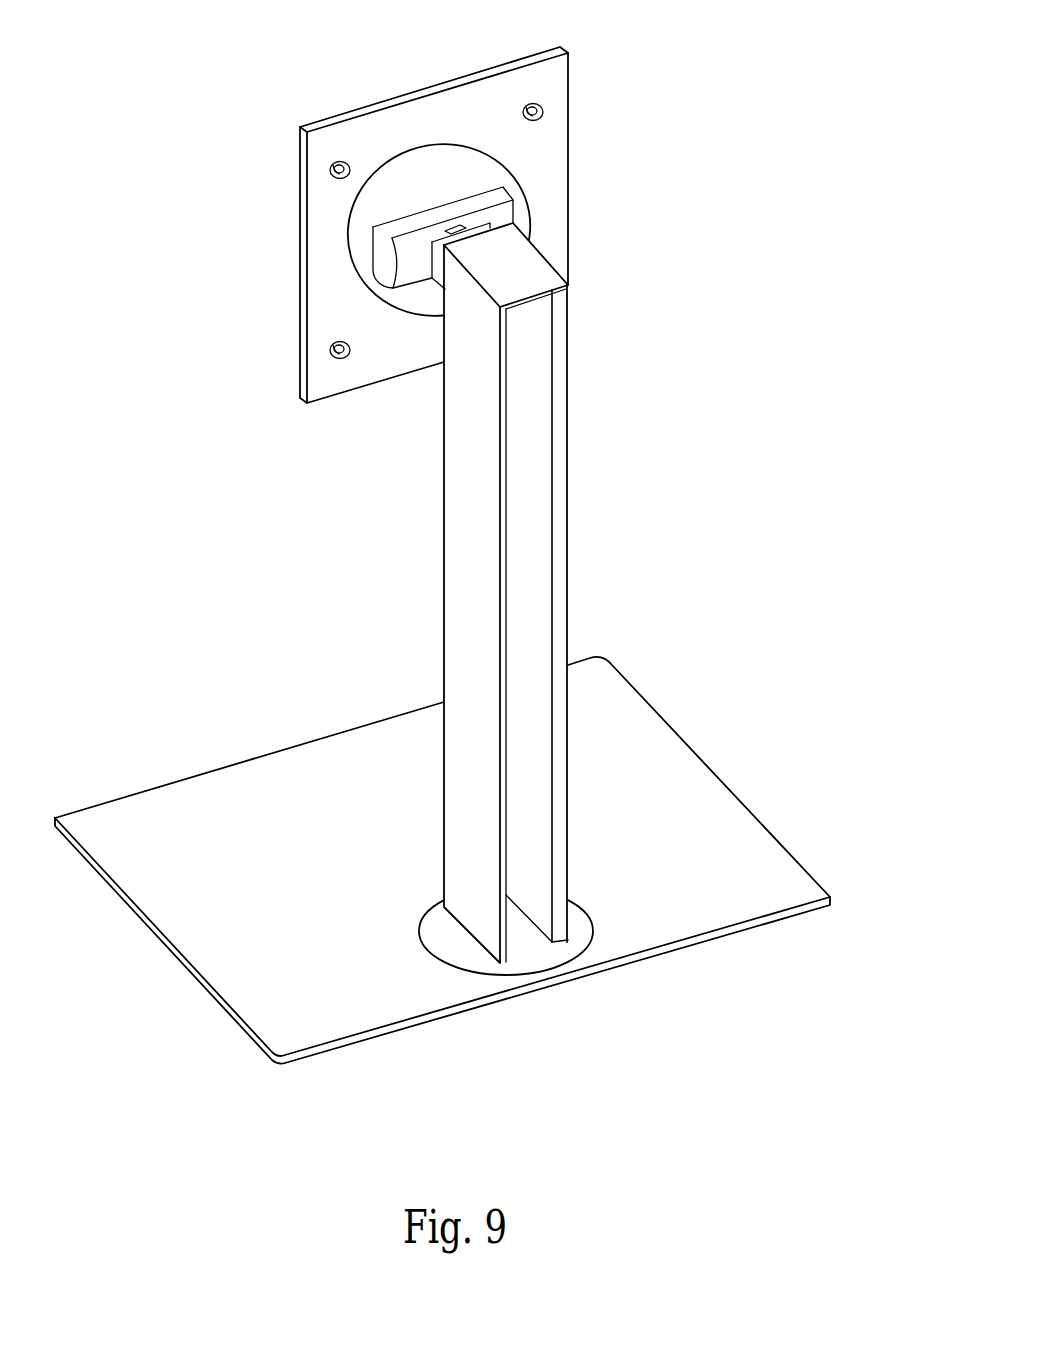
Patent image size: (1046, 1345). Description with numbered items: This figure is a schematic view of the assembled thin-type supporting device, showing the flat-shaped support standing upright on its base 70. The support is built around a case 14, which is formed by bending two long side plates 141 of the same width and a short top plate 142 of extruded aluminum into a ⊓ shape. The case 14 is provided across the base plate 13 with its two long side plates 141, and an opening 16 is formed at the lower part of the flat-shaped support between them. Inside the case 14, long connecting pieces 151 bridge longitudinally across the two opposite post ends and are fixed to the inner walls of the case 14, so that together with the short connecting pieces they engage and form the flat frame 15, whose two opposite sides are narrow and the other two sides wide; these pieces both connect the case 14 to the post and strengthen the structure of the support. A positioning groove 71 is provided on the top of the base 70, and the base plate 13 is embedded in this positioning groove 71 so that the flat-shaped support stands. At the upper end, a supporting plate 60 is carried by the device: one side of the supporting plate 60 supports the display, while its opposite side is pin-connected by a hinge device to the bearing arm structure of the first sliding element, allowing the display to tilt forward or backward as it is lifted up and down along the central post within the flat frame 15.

The base plate 13 is at (537, 952).
The case 14 is at (570, 582).
The long side plate 141 is at (560, 367).
The short top plate 142 is at (527, 304).
The flat frame 15 is at (608, 635).
The long connecting piece 151 is at (535, 508).
The opening 16 is at (537, 782).
The supporting plate 60 is at (340, 77).
The base 70 is at (442, 860).
The positioning groove 71 is at (593, 922).